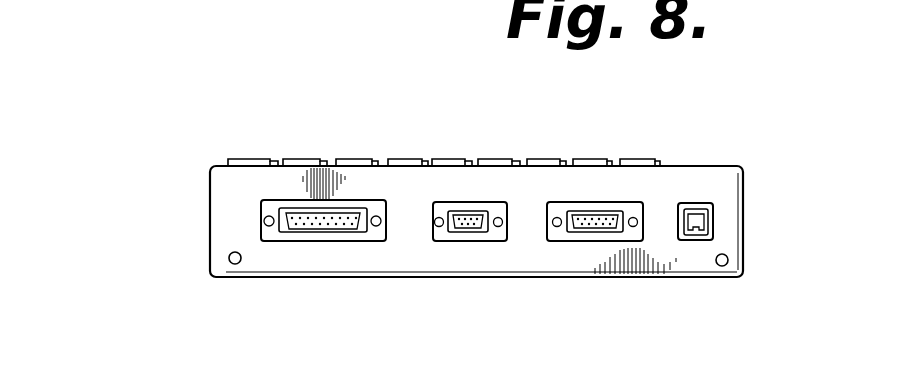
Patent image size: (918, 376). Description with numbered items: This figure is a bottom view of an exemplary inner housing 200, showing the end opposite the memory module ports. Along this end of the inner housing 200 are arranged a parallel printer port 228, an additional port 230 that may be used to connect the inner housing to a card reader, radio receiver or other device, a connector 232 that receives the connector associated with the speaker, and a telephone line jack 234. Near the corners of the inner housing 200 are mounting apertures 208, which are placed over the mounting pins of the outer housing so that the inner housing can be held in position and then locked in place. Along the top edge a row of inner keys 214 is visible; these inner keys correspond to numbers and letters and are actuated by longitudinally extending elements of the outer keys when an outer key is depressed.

The inner housing 200 is at (184, 195).
The mounting apertures 208 is at (237, 260).
The inner keys 214 is at (444, 104).
The parallel printer port 228 is at (309, 205).
The additional port 230 is at (474, 207).
The connector 232 is at (583, 240).
The telephone line jack 234 is at (694, 213).